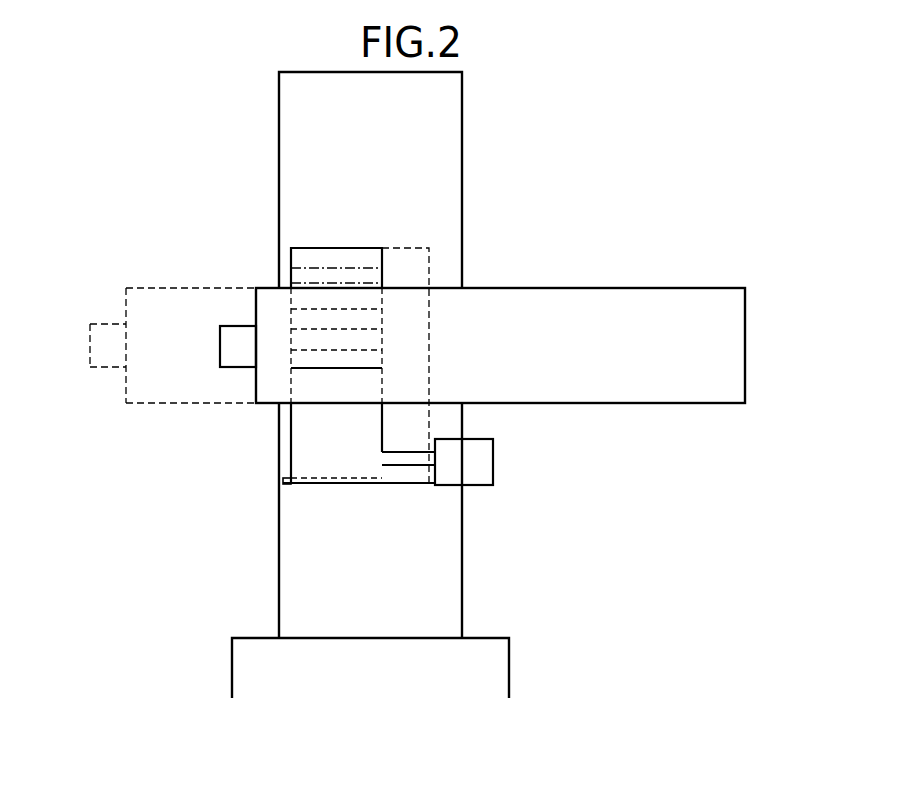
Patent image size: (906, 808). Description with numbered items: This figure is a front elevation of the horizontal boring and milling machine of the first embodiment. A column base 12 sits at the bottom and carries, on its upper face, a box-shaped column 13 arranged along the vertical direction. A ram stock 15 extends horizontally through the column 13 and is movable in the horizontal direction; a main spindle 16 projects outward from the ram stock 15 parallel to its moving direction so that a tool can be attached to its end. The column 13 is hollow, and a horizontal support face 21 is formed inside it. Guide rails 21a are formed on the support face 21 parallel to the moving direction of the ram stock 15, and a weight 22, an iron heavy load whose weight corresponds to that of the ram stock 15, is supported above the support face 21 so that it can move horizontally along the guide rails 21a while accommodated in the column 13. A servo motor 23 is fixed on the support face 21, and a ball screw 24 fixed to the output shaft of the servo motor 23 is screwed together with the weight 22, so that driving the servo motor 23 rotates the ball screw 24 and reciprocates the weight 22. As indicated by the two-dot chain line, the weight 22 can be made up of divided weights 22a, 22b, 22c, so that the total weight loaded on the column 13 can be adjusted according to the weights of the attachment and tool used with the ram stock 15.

The column base 12 is at (509, 652).
The column 13 is at (462, 101).
The ram stock 15 is at (602, 287).
The main spindle 16 is at (234, 337).
The support face 21 is at (306, 478).
The guide rails 21a is at (283, 481).
The weight 22 is at (307, 247).
The divided weight 22a is at (347, 255).
The divided weight 22b is at (375, 268).
The divided weight 22c is at (388, 288).
The servo motor 23 is at (490, 462).
The ball screw 24 is at (417, 458).